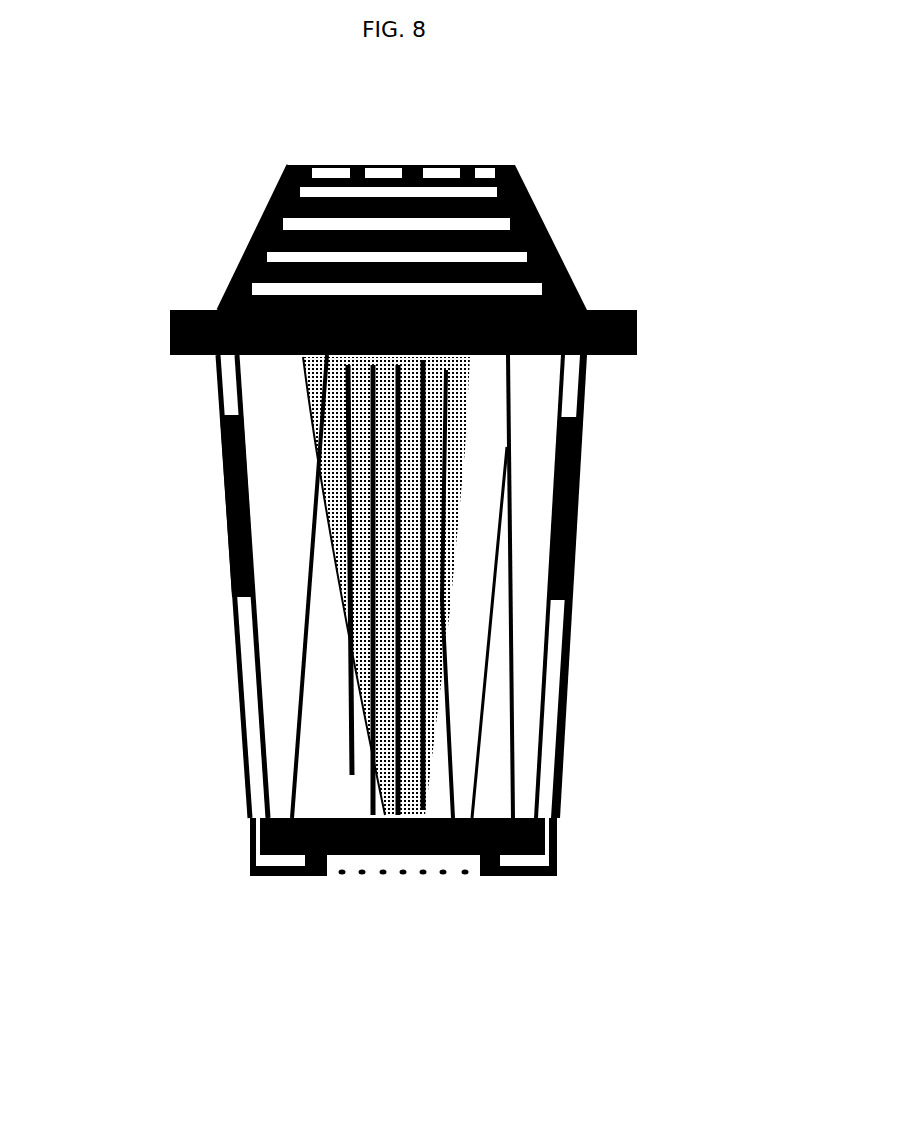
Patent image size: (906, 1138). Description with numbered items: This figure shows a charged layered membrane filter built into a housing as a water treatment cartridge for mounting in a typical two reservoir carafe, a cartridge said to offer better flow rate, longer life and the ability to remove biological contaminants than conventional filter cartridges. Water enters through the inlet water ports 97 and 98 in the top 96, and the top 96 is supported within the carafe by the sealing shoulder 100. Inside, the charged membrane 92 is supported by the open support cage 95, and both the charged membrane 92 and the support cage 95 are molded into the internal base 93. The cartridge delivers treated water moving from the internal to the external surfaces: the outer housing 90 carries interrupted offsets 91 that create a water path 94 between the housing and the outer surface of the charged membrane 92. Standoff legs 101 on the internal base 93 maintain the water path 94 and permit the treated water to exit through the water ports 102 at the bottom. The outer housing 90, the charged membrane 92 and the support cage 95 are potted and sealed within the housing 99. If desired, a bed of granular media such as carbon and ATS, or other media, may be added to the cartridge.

The outer housing 90 is at (580, 547).
The interrupted offsets 91 is at (572, 627).
The charged membrane 92 is at (498, 782).
The internal base 93 is at (552, 818).
The water path 94 is at (237, 568).
The support cage 95 is at (320, 440).
The top 96 is at (250, 232).
The inlet water port 97 is at (548, 222).
The inlet water port 98 is at (377, 165).
The housing 99 is at (170, 305).
The sealing shoulder 100 is at (633, 353).
The standoff legs 101 is at (293, 870).
The water ports 102 is at (435, 883).